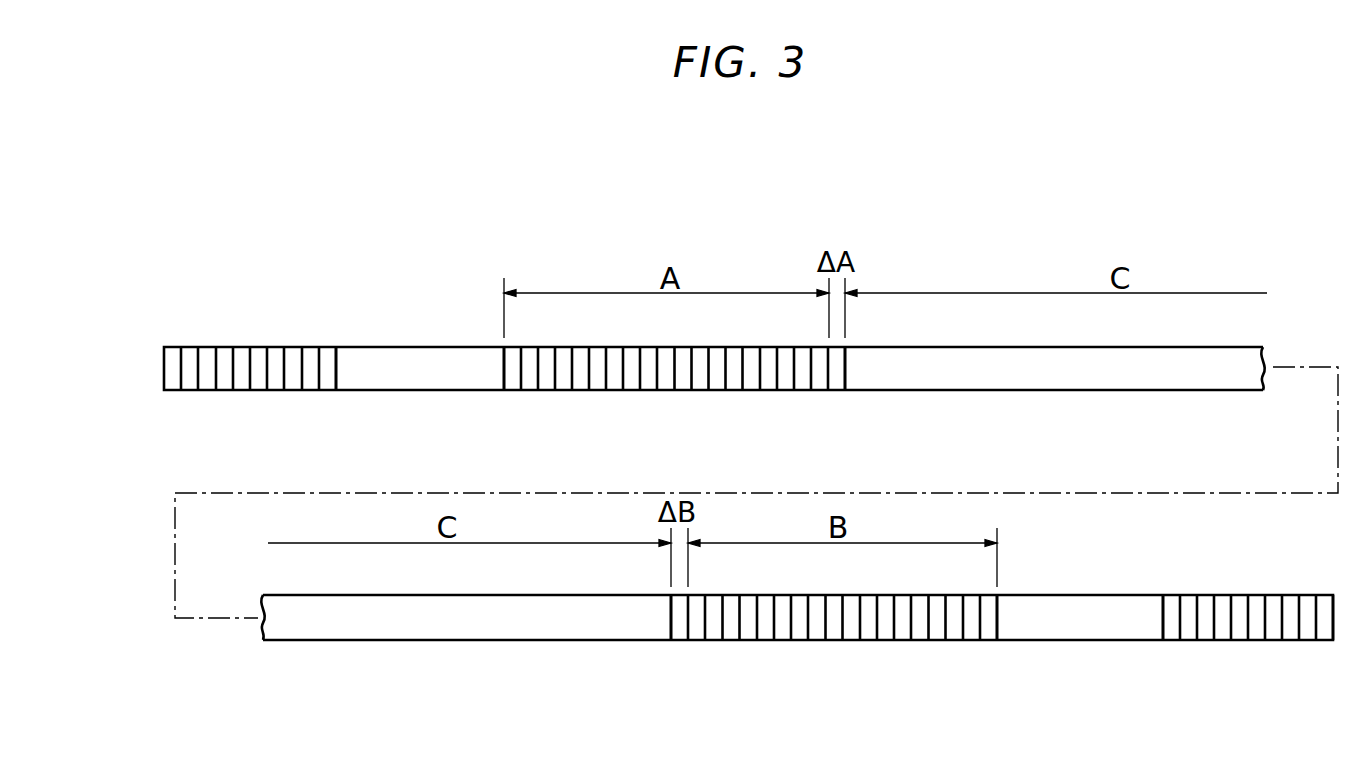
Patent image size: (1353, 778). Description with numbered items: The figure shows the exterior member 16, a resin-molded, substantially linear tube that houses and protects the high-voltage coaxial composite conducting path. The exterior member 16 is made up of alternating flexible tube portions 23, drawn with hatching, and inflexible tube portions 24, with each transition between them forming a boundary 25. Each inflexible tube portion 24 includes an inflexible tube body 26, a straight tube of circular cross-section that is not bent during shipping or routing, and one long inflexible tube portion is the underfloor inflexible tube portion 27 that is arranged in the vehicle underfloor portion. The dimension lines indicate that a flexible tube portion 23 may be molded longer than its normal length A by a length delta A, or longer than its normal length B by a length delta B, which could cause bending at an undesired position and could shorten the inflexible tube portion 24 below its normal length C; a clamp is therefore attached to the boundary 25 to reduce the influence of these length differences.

The exterior member 16 is at (1196, 232).
The flexible tube portion 23 is at (257, 347).
The inflexible tube portion 24 is at (417, 347).
The boundary 25 is at (336, 372).
The inflexible tube body 26 is at (1055, 363).
The underfloor inflexible tube portion 27 is at (1209, 363).